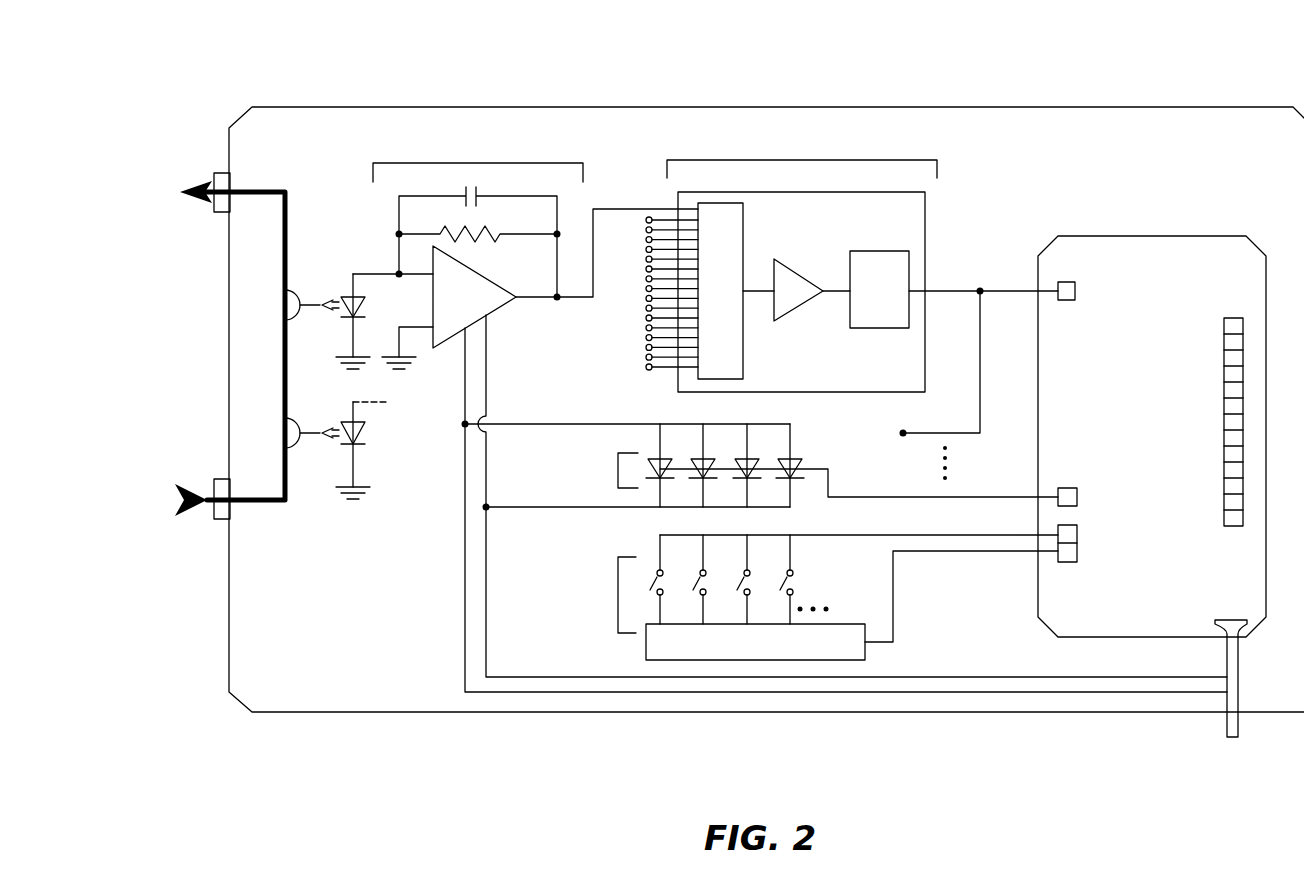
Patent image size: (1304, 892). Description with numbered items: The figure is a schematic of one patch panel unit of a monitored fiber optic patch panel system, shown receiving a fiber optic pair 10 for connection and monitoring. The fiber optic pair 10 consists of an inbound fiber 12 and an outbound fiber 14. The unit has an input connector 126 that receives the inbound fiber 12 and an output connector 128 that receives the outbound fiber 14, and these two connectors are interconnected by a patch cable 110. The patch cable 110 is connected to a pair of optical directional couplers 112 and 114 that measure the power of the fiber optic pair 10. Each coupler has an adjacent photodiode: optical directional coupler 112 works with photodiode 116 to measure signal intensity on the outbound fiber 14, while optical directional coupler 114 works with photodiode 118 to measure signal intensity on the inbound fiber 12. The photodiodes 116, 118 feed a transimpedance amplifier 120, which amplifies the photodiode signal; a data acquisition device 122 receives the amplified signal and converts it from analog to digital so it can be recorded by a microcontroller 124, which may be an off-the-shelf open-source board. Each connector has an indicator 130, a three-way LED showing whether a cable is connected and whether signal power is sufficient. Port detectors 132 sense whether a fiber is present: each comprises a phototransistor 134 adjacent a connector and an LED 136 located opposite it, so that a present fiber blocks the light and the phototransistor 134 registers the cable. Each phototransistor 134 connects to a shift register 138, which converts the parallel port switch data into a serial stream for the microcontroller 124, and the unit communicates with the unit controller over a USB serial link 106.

The fiber optic pair 10 is at (176, 332).
The inbound fiber 12 is at (187, 515).
The outbound fiber 14 is at (198, 178).
The serial link 106 is at (1227, 745).
The patch cable 110 is at (276, 190).
The optical directional coupler 112 is at (294, 296).
The optical directional coupler 114 is at (298, 450).
The photodiode 116 is at (345, 288).
The photodiode 118 is at (366, 448).
The transimpedance amplifier 120 is at (470, 262).
The data acquisition device 122 is at (940, 232).
The microcontroller 124 is at (1108, 234).
The input connector 126 is at (220, 522).
The output connector 128 is at (220, 172).
The indicator 130 is at (770, 445).
The port detector 132 is at (812, 572).
The phototransistor 134 is at (655, 596).
The LED 136 is at (652, 570).
The shift register 138 is at (866, 665).